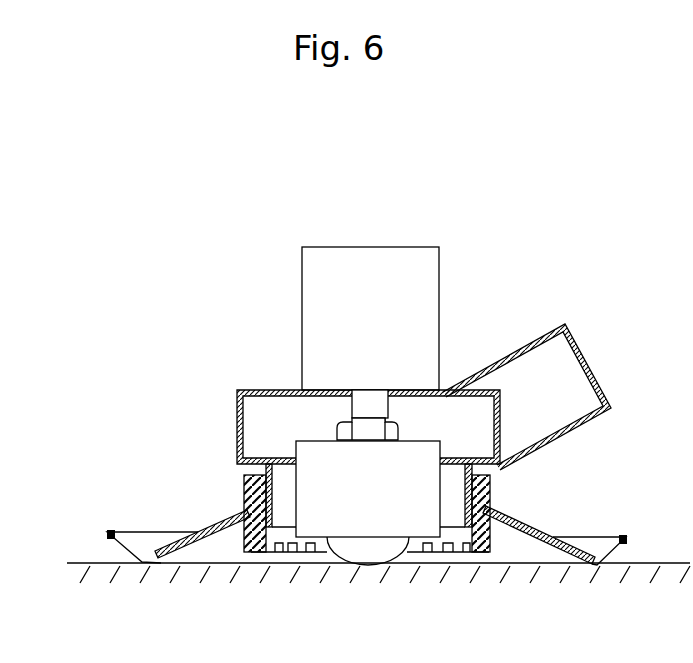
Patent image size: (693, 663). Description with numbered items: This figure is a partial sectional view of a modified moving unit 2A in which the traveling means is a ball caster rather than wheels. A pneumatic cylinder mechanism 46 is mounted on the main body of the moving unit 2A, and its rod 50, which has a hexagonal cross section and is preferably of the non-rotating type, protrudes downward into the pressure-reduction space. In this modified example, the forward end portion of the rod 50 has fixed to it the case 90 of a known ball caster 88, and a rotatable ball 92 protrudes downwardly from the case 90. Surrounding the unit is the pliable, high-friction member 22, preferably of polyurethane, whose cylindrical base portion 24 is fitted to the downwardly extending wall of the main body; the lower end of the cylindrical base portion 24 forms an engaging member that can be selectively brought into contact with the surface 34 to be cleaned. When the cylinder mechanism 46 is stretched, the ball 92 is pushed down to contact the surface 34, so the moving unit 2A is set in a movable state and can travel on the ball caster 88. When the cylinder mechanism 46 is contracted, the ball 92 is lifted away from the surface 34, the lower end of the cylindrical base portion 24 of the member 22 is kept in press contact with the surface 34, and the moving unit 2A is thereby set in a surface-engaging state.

The moving unit 2A is at (239, 364).
The pneumatic cylinder mechanism 46 is at (384, 247).
The rod 50 is at (386, 408).
The member 22 is at (232, 514).
The ball caster 88 is at (442, 502).
The surface to be cleaned 34 is at (650, 577).
The cylindrical base portion 24 is at (248, 537).
The case 90 is at (318, 518).
The ball 92 is at (367, 555).